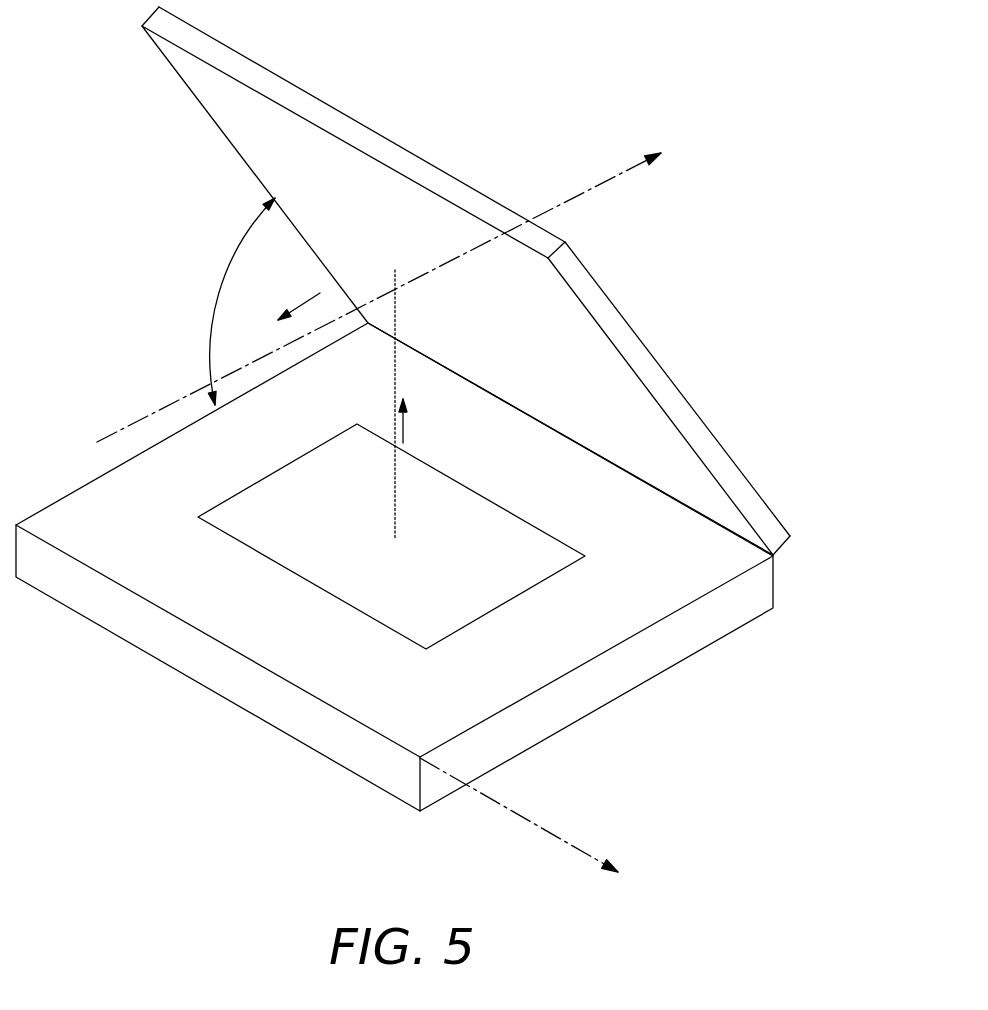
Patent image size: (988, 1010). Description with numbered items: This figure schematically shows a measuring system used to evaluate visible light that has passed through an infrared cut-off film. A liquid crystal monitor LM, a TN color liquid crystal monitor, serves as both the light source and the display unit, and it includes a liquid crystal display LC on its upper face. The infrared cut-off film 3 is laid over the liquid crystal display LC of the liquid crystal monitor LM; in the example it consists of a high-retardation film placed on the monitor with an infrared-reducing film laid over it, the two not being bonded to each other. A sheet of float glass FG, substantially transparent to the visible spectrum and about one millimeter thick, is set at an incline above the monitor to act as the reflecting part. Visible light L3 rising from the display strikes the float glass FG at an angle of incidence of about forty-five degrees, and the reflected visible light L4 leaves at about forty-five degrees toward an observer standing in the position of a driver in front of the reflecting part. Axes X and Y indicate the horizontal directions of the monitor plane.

The float glass FG is at (605, 310).
The liquid crystal display LC is at (237, 608).
The liquid crystal monitor LM is at (552, 722).
The infrared cut-off film 3 is at (242, 510).
The visible light L3 is at (403, 425).
The visible light L4 is at (303, 303).
The X axis X is at (519, 831).
The Y axis Y is at (379, 282).